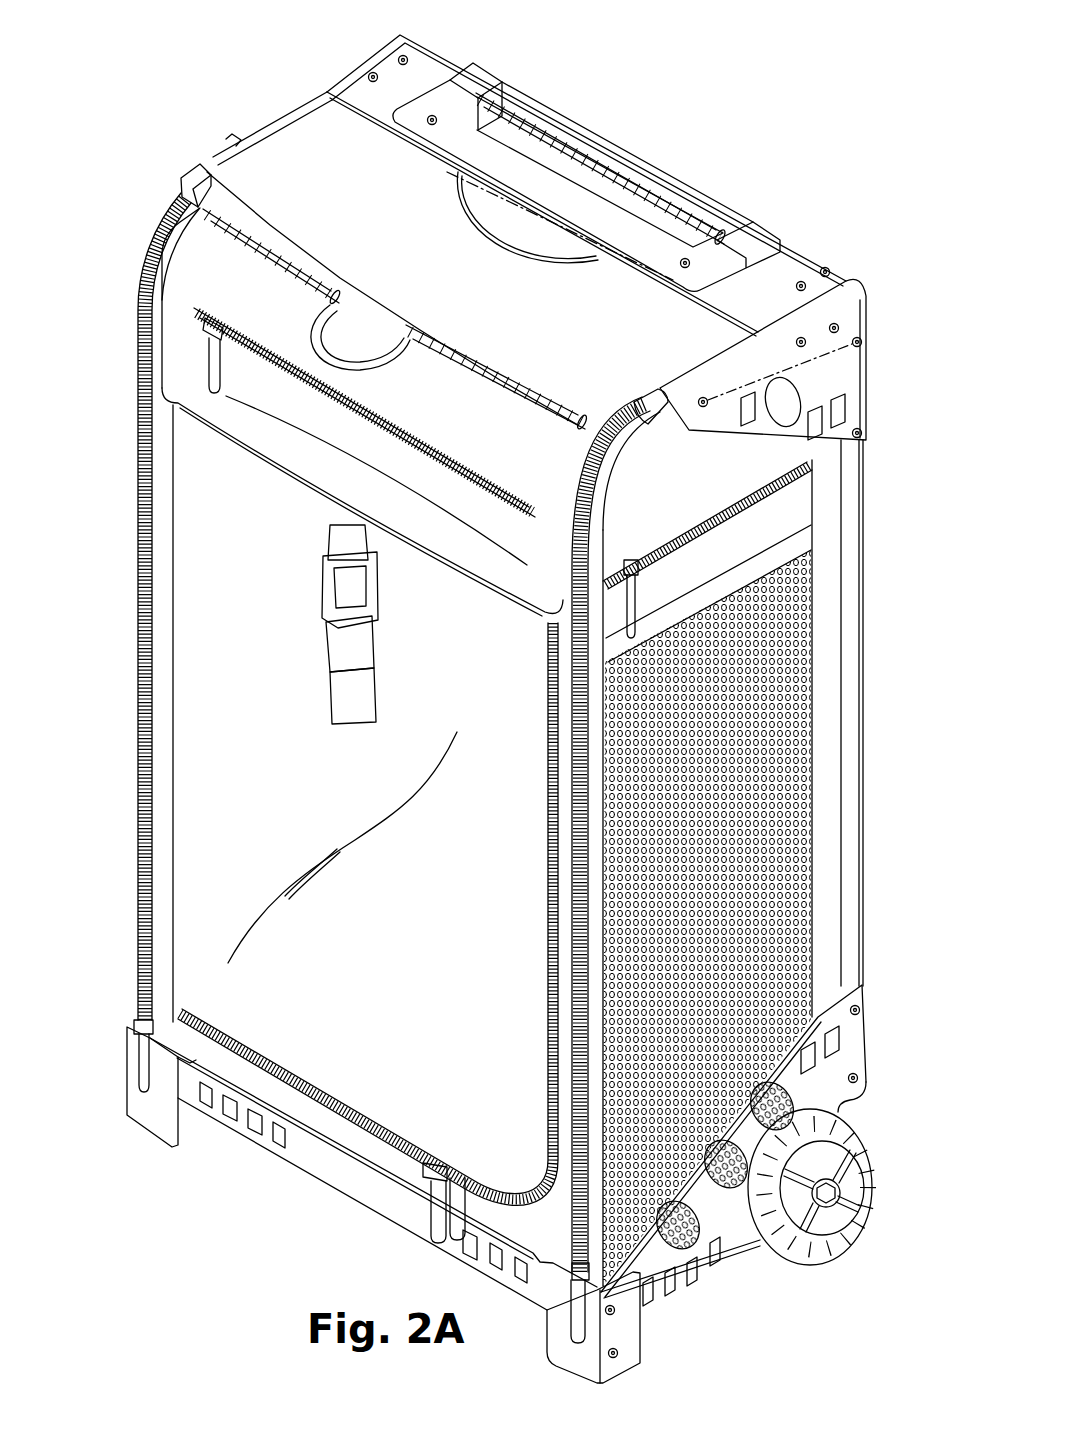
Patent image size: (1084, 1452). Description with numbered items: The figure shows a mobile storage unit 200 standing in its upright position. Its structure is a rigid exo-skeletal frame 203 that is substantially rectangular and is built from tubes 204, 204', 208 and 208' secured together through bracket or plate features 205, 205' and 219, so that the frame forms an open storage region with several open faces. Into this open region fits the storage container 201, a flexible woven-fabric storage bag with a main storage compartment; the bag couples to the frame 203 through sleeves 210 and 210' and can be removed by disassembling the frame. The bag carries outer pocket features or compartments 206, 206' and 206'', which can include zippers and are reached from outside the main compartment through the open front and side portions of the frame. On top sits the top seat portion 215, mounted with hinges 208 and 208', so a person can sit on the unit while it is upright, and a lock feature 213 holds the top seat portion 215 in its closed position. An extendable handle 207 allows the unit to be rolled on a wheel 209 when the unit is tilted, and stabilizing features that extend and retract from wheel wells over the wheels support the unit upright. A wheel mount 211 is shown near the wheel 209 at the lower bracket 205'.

The mobile storage unit 200 is at (205, 70).
The storage container 201 is at (760, 668).
The rigid exo-skeletal frame 203 is at (868, 560).
The tube 204 is at (662, 459).
The tube 204' is at (893, 713).
The bracket or plate feature 205 is at (787, 350).
The bracket or plate feature 205' is at (772, 1145).
The outer pocket feature or compartment 206 is at (294, 412).
The outer pocket feature or compartment 206' is at (772, 550).
The outer pocket feature or compartment 206'' is at (368, 933).
The extendable handle 207 is at (680, 194).
The hinge 208 is at (264, 263).
The hinge 208' is at (497, 377).
The wheel 209 is at (860, 1211).
The sleeve 210 is at (757, 870).
The sleeve 210' is at (126, 642).
The wheel mount 211 is at (849, 1096).
The lock feature 213 is at (332, 600).
The top seat portion 215 is at (330, 153).
The bracket or plate feature 219 is at (160, 1105).